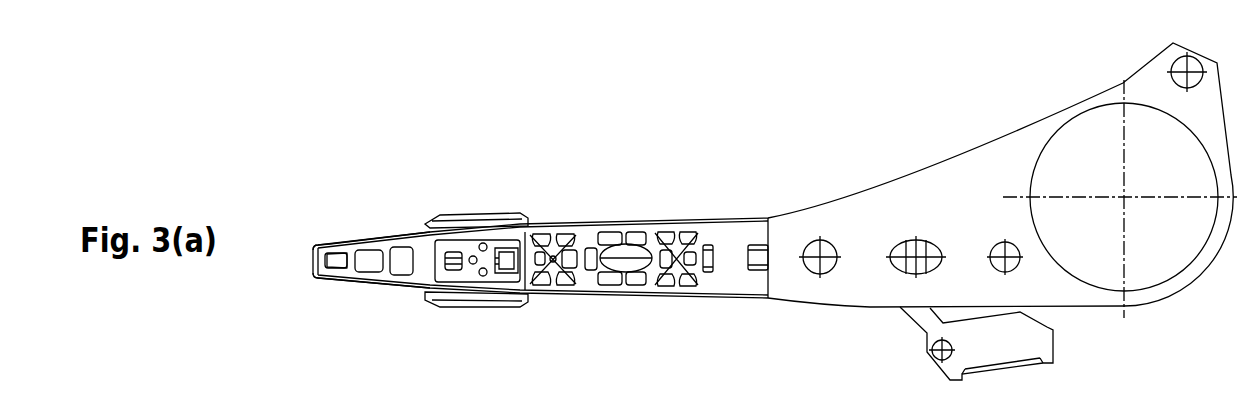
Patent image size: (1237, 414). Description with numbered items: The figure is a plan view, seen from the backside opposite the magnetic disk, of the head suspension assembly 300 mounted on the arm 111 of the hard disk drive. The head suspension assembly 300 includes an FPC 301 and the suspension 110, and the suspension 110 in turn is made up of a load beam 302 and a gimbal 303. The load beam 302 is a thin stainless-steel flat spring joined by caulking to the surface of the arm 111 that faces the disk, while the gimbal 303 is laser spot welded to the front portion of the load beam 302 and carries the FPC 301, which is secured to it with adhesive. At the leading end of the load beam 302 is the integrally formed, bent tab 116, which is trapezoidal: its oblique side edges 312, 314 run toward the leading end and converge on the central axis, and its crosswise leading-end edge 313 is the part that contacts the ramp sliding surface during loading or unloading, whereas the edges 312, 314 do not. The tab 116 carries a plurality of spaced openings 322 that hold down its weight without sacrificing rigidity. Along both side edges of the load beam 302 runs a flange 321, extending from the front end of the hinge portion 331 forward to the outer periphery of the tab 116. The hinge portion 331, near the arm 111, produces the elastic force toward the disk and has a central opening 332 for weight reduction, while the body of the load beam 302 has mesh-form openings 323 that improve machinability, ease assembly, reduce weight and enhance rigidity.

The head suspension assembly 300 is at (687, 168).
The suspension 110 is at (528, 193).
The arm 111 is at (890, 205).
The tab 116 is at (340, 273).
The FPC 301 is at (913, 315).
The load beam 302 is at (585, 213).
The gimbal 303 is at (523, 297).
The edge 312 is at (368, 235).
The edge 313 is at (312, 250).
The edge 314 is at (327, 282).
The flange 321 is at (692, 295).
The openings 322 is at (372, 267).
The openings 323 is at (568, 295).
The hinge portion 331 is at (757, 293).
The opening 332 is at (762, 253).